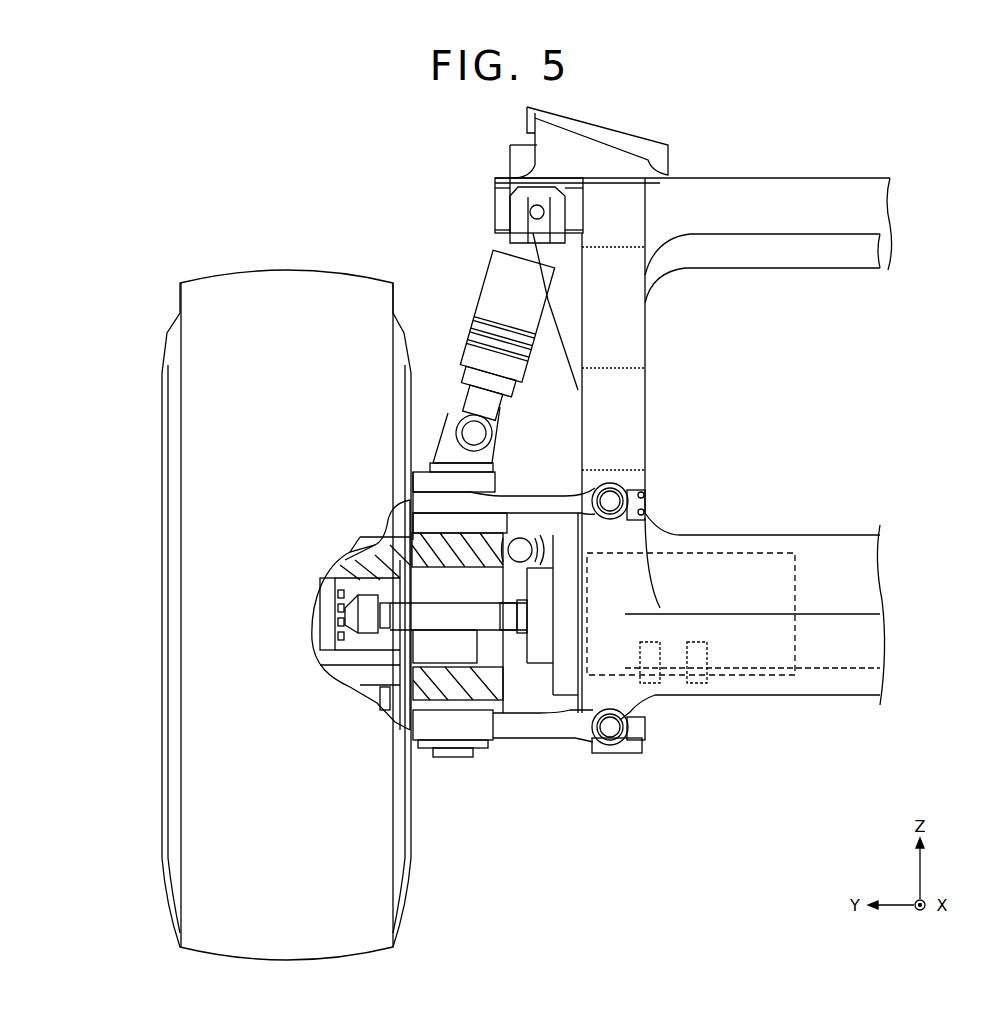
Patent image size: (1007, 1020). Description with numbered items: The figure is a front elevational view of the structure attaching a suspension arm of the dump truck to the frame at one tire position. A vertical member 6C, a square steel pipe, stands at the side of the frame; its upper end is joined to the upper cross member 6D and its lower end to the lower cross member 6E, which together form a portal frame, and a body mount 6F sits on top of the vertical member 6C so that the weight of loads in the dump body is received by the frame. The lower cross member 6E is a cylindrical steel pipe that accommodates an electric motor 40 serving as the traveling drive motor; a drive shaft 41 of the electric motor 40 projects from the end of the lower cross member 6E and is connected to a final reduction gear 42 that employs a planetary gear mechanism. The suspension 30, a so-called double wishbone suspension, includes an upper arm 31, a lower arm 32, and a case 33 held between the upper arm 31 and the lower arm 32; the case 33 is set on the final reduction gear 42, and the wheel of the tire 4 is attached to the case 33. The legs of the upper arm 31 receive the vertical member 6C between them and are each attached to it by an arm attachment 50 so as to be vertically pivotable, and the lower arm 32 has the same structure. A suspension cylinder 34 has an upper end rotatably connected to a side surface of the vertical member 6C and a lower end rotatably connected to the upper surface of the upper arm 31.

The tire 4 is at (295, 285).
The suspension 30 is at (428, 196).
The upper arm 31 is at (567, 488).
The lower arm 32 is at (555, 727).
The case 33 is at (472, 690).
The suspension cylinder 34 is at (490, 293).
The electric motor 40 is at (730, 552).
The drive shaft 41 is at (490, 612).
The final reduction gear 42 is at (355, 625).
The arm attachment 50 is at (612, 487).
The vertical member 6C is at (637, 343).
The upper cross member 6D is at (791, 185).
The lower cross member 6E is at (847, 543).
The body mount 6F is at (630, 155).